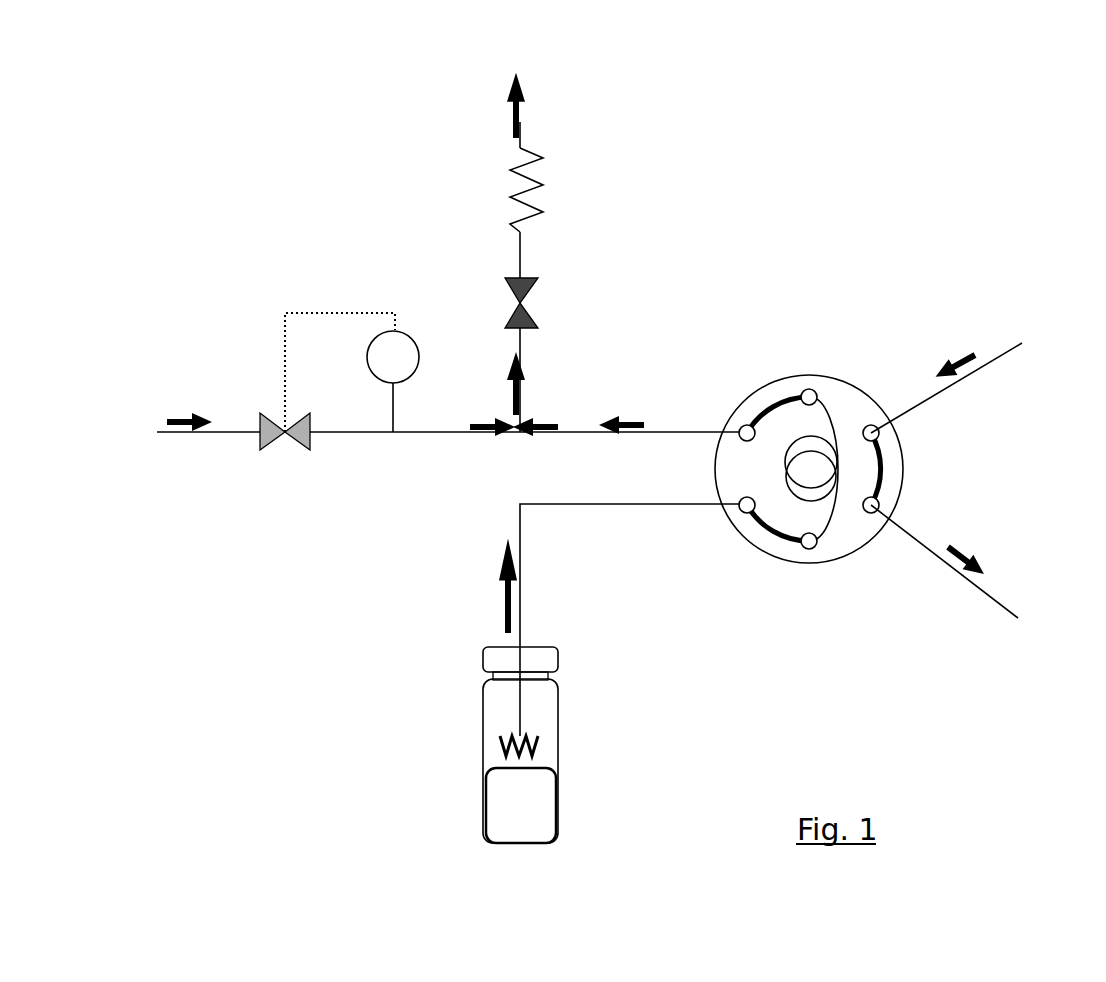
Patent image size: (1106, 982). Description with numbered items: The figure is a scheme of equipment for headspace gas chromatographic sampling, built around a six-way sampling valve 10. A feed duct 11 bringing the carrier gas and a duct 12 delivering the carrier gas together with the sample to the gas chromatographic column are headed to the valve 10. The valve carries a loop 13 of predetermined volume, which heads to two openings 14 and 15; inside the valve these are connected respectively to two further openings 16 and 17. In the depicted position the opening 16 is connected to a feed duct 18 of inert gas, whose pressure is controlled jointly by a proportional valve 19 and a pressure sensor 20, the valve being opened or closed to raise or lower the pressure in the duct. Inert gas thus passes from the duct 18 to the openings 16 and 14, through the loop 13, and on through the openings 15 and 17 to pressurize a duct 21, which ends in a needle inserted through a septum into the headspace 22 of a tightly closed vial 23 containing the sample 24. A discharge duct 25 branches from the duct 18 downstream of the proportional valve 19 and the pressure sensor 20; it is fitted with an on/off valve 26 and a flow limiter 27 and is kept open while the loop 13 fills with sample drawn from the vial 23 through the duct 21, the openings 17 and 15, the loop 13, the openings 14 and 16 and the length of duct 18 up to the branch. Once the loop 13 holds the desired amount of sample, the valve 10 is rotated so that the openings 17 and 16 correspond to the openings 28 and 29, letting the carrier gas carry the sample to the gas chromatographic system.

The 6-way sampling valve 10 is at (855, 556).
The feed duct 11 is at (1003, 357).
The duct 12 is at (1000, 593).
The loop 13 is at (802, 468).
The opening 14 is at (810, 392).
The opening 15 is at (808, 548).
The opening 16 is at (748, 427).
The opening 17 is at (745, 512).
The feed duct 18 is at (443, 432).
The proportional valve 19 is at (285, 440).
The pressure sensor 20 is at (372, 343).
The duct 21 is at (612, 504).
The headspace 22 is at (510, 706).
The vial 23 is at (558, 815).
The sample 24 is at (521, 805).
The discharge duct 25 is at (522, 352).
The on/off valve 26 is at (520, 303).
The flow limiter 27 is at (548, 158).
The opening 28 is at (871, 425).
The opening 29 is at (879, 504).